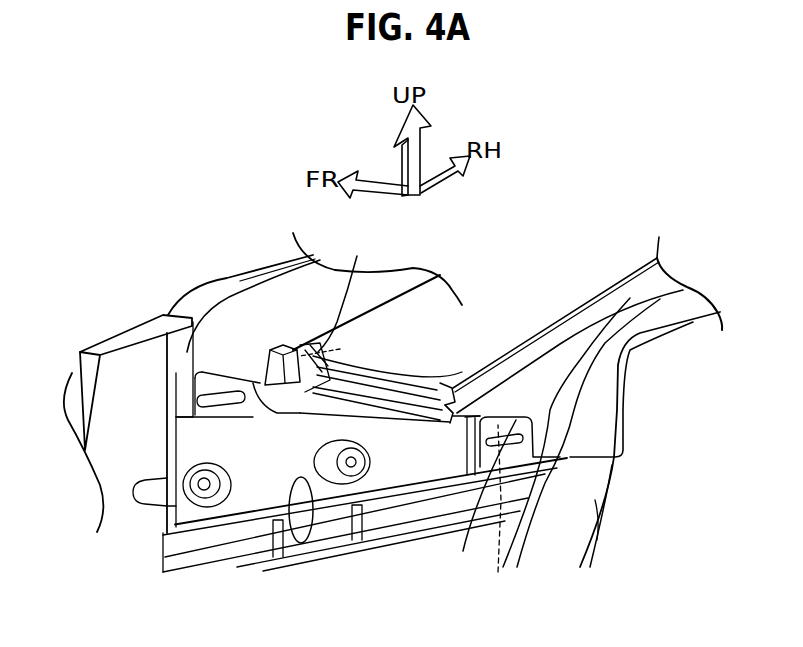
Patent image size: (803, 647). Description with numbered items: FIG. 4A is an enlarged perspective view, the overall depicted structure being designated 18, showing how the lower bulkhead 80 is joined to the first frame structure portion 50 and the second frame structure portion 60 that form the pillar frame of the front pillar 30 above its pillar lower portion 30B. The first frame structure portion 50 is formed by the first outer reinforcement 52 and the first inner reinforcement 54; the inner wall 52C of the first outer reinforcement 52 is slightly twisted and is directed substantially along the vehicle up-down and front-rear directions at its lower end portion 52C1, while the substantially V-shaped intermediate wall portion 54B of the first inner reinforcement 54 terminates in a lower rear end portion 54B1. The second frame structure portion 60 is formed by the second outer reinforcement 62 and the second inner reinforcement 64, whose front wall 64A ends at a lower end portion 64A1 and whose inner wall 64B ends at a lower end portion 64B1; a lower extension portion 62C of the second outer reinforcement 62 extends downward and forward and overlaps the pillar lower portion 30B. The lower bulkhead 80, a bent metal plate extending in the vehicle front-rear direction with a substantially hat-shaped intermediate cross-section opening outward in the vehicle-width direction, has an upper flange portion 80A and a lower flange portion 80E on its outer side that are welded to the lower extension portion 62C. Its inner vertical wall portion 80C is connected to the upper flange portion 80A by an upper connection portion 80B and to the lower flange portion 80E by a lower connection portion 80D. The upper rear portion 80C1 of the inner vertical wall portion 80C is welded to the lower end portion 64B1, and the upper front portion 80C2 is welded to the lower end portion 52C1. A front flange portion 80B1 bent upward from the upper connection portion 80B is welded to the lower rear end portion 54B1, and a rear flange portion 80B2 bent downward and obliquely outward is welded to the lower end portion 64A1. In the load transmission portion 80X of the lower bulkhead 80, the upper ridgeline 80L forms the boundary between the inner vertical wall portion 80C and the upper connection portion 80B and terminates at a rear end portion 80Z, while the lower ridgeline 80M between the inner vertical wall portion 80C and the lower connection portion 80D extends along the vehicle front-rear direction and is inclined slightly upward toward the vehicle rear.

The vehicle body side structure 18 is at (147, 236).
The front pillar 30 is at (672, 442).
The pillar lower portion 30B is at (118, 530).
The first frame structure portion 50 is at (423, 302).
The first outer reinforcement 52 is at (268, 270).
The inner wall 52C is at (321, 279).
The lower end portion 52C1 is at (236, 391).
The first inner reinforcement 54 is at (358, 262).
The intermediate wall portion 54B is at (345, 346).
The lower rear end portion 54B1 is at (341, 349).
The second frame structure portion 60 is at (680, 342).
The second outer reinforcement 62 is at (590, 490).
The lower extension portion 62C is at (590, 513).
The second inner reinforcement 64 is at (587, 314).
The front wall 64A is at (614, 295).
The lower end portion 64A1 is at (453, 402).
The inner wall 64B is at (645, 308).
The lower end portion 64B1 is at (498, 572).
The lower bulkhead 80 is at (176, 458).
The upper flange portion 80A is at (413, 387).
The upper connection portion 80B is at (397, 390).
The front flange portion 80B1 is at (303, 355).
The rear flange portion 80B2 is at (471, 378).
The inner vertical wall portion 80C is at (259, 489).
The upper rear portion 80C1 is at (463, 551).
The upper front portion 80C2 is at (207, 372).
The lower connection portion 80D is at (327, 508).
The lower flange portion 80E is at (400, 513).
The upper ridgeline 80L is at (317, 395).
The lower ridgeline 80M is at (291, 492).
The load transmission portion 80X is at (214, 442).
The rear end portion 80Z is at (448, 422).